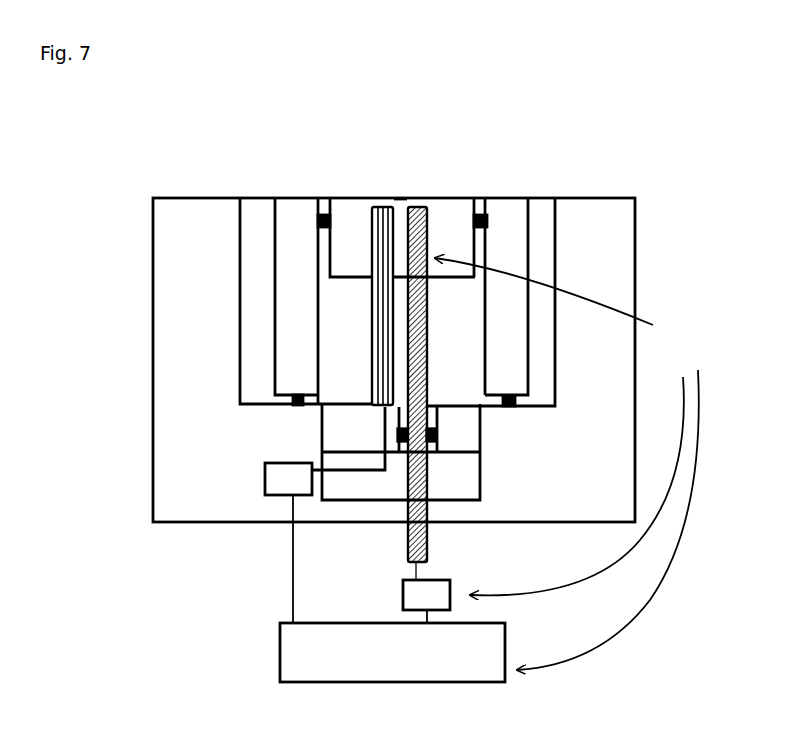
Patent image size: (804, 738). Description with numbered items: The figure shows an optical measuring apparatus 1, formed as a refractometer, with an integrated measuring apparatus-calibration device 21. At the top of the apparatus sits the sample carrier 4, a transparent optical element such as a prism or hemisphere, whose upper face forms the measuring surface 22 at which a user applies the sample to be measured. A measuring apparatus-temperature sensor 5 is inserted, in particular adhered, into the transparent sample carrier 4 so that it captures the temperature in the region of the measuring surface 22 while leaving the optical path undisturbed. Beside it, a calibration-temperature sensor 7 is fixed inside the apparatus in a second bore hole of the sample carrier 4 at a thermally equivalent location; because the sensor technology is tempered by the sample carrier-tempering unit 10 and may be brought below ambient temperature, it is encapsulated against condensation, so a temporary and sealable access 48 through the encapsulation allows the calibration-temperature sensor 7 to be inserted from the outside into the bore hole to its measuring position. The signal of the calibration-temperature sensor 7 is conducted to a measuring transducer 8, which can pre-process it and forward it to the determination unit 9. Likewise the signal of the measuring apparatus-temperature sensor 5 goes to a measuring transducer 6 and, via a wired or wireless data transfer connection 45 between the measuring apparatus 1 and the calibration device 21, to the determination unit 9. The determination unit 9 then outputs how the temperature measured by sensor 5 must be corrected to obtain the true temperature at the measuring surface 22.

The optical measuring apparatus 1 is at (106, 201).
The sample carrier 4 is at (461, 199).
The measuring apparatus-temperature sensor 5 is at (376, 229).
The measuring transducer 6 is at (273, 477).
The calibration-temperature sensor 7 is at (420, 237).
The measuring transducer 8 is at (434, 580).
The determination unit 9 is at (458, 683).
The sample carrier-tempering unit 10 is at (371, 487).
The measuring apparatus-calibration device 21 is at (585, 506).
The measuring surface 22 is at (397, 199).
The data transfer connection 45 is at (292, 572).
The temporary and sealable access 48 is at (446, 433).